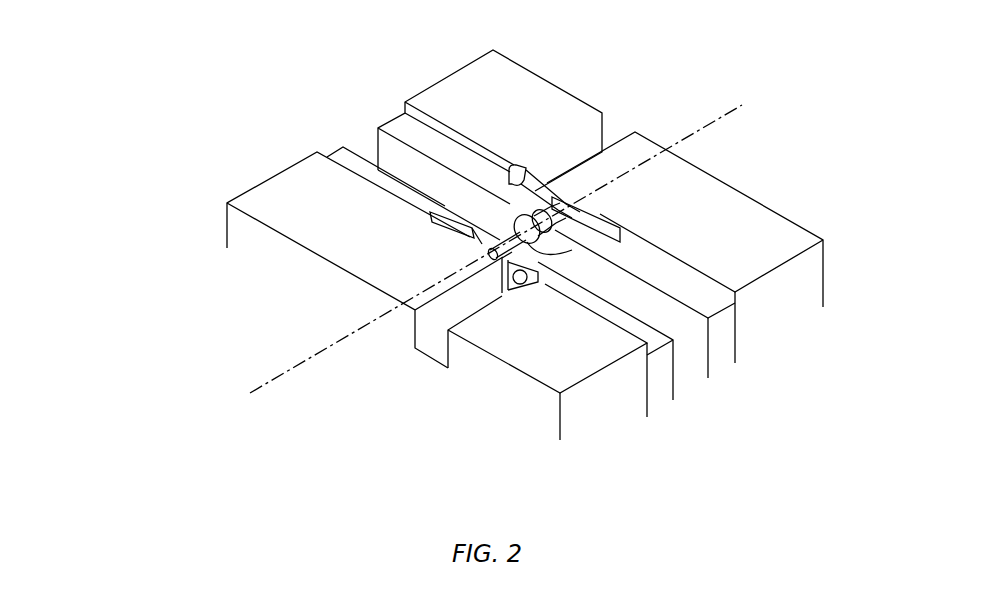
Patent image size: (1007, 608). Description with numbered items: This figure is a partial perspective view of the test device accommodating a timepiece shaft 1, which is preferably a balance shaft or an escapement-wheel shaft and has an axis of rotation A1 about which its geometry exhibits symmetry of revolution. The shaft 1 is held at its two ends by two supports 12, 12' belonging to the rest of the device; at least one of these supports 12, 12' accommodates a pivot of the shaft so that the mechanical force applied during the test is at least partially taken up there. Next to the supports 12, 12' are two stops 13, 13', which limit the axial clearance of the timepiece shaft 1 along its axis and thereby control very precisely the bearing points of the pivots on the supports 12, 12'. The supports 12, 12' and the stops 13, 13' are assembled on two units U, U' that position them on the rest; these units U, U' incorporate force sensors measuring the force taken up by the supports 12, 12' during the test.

The timepiece shaft 1 is at (497, 220).
The support 12 is at (722, 211).
The support 12' is at (417, 365).
The stop 13 is at (620, 124).
The stop 13' is at (289, 195).
The unit U is at (724, 199).
The unit U' is at (282, 199).
The axis of rotation A1 is at (295, 363).